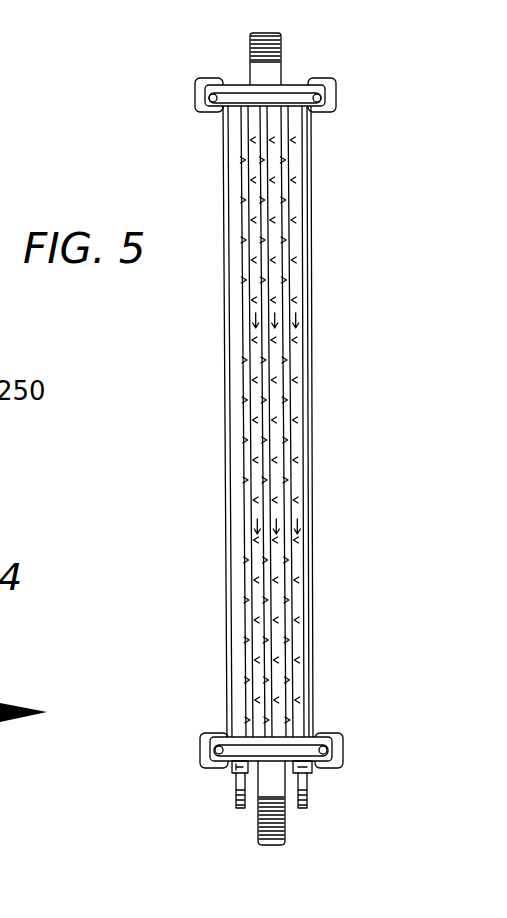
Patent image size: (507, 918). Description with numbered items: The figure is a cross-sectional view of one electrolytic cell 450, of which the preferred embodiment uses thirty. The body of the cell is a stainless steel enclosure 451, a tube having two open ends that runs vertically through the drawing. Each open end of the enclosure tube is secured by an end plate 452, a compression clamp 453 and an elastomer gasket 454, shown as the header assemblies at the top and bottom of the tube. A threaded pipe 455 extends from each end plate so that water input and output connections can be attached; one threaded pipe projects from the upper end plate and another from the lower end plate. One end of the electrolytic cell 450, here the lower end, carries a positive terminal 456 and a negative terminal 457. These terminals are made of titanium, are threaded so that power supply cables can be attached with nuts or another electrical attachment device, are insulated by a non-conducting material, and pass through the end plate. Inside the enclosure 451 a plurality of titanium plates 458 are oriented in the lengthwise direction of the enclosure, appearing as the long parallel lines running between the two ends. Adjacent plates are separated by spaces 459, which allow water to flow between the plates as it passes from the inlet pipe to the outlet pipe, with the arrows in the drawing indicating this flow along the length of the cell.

The electrolytic cell 450 is at (293, 427).
The stainless steel enclosure 451 is at (313, 527).
The end plate 452 is at (240, 82).
The compression clamp 453 is at (342, 80).
The elastomer gasket 454 is at (207, 97).
The threaded pipe 455 is at (285, 828).
The positive terminal 456 is at (235, 797).
The negative terminal 457 is at (308, 795).
The titanium plates 458 is at (275, 632).
The spaces 459 is at (288, 593).